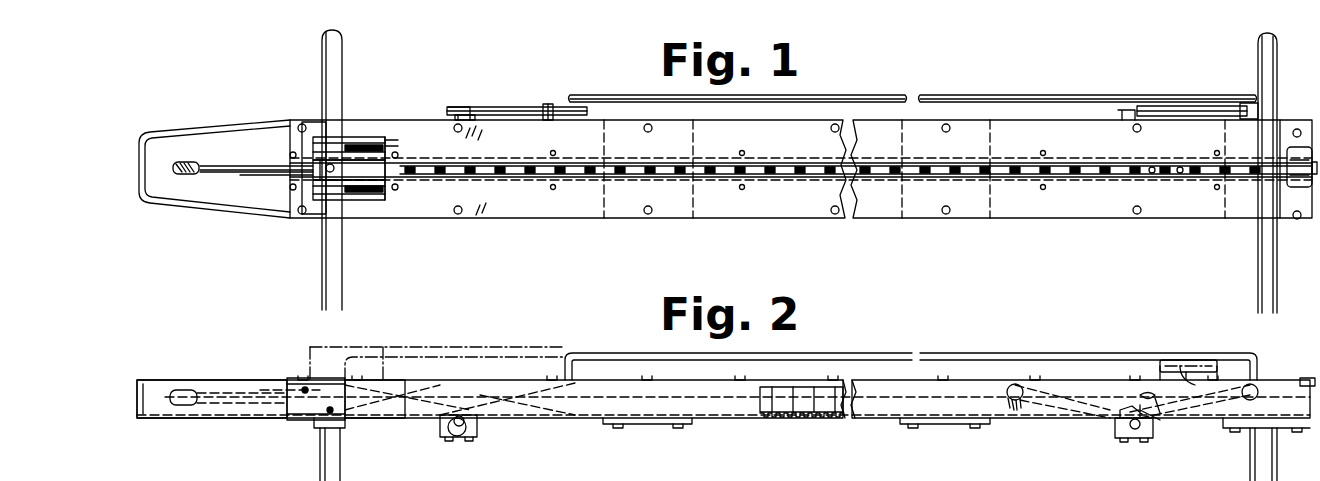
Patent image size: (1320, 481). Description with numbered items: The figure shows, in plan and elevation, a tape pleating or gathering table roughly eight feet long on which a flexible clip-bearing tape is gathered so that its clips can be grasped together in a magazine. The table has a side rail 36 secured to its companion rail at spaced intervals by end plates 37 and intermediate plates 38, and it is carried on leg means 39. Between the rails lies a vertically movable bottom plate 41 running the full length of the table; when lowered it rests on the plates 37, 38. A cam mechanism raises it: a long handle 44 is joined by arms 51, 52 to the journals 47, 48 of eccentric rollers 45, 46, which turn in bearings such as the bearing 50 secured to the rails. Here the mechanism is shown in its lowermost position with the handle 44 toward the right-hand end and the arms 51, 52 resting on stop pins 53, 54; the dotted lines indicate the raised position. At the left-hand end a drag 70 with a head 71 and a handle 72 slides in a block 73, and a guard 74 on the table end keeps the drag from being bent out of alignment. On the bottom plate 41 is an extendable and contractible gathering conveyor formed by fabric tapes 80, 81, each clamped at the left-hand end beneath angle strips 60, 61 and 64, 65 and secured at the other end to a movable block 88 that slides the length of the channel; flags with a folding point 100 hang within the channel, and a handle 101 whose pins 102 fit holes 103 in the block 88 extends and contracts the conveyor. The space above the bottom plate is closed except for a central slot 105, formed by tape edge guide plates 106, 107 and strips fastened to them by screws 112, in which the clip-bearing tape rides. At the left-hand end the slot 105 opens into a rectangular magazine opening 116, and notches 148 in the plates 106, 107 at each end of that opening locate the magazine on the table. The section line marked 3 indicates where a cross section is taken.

In FIG. 1, the rack / section line 3 is at (512, 170).
In FIG. 2, the side rail 36 is at (870, 405).
In FIG. 1, the end plate 37 is at (380, 205).
In FIG. 2, the end plate 37 is at (370, 418).
In FIG. 1, the intermediate plate 38 is at (680, 205).
In FIG. 2, the intermediate plate 38 is at (662, 424).
In FIG. 1, the leg means 39 is at (342, 262).
In FIG. 2, the leg means 39 is at (1250, 468).
In FIG. 2, the bottom plate 41 is at (800, 418).
In FIG. 1, the handle 44 is at (982, 97).
In FIG. 2, the handle 44 is at (970, 355).
In FIG. 2, the eccentric roller 45 is at (462, 438).
In FIG. 2, the eccentric roller 46 is at (1133, 438).
In FIG. 1, the journal 47 is at (452, 108).
In FIG. 2, the journal 48 is at (447, 437).
In FIG. 2, the bearing 50 is at (478, 425).
In FIG. 1, the arm 51 is at (510, 108).
In FIG. 2, the arm 51 is at (400, 410).
In FIG. 1, the arm 52 is at (1178, 106).
In FIG. 2, the arm 52 is at (1065, 405).
In FIG. 1, the stop pin 53 is at (550, 104).
In FIG. 1, the stop pin 54 is at (1248, 103).
In FIG. 1, the angle strip 60 is at (322, 140).
In FIG. 1, the angle strip 61 is at (313, 140).
In FIG. 1, the angle strip 64 is at (315, 195).
In FIG. 1, the angle strip 65 is at (322, 198).
In FIG. 1, the drag 70 is at (290, 170).
In FIG. 2, the drag 70 is at (250, 405).
In FIG. 1, the head 71 is at (334, 170).
In FIG. 2, the head 71 is at (308, 420).
In FIG. 1, the handle 72 is at (198, 166).
In FIG. 2, the handle 72 is at (198, 392).
In FIG. 1, the block 73 is at (295, 176).
In FIG. 2, the block 73 is at (282, 412).
In FIG. 1, the guard 74 is at (228, 212).
In FIG. 2, the guard 74 is at (232, 382).
In FIG. 1, the fabric tape 80 is at (368, 146).
In FIG. 1, the fabric tape 81 is at (358, 192).
In FIG. 2, the movable block 88 is at (1150, 425).
In FIG. 1, the folding point 100 is at (585, 178).
In FIG. 2, the handle 101 is at (1225, 336).
In FIG. 2, the pin 102 is at (1158, 362).
In FIG. 1, the hole 103 is at (1210, 175).
In FIG. 1, the slot 105 is at (760, 178).
In FIG. 1, the tape edge guide plate 106 is at (505, 208).
In FIG. 1, the tape edge guide plate 107 is at (495, 130).
In FIG. 1, the screw 112 is at (745, 152).
In FIG. 2, the screw 112 is at (1040, 375).
In FIG. 1, the magazine opening 116 is at (392, 143).
In FIG. 1, the notch 148 is at (292, 152).